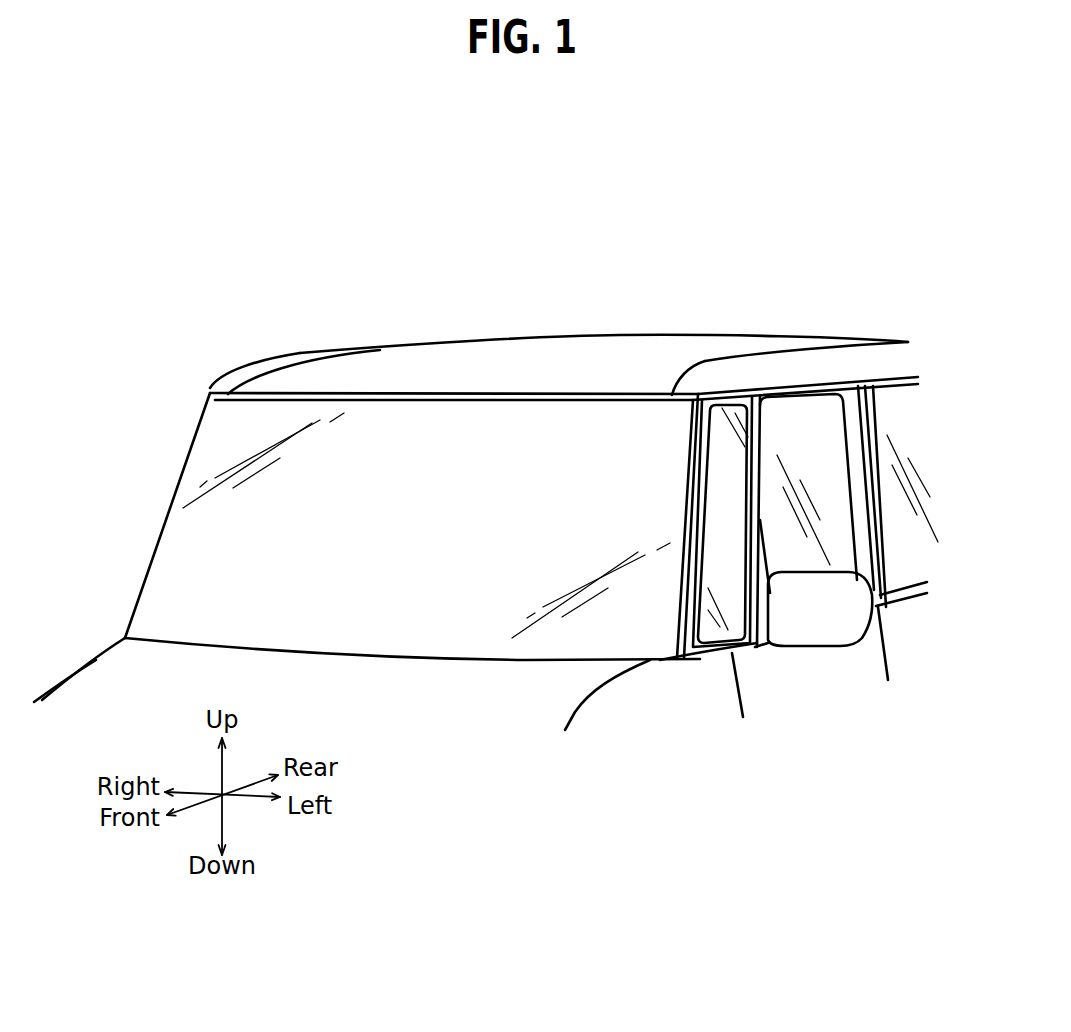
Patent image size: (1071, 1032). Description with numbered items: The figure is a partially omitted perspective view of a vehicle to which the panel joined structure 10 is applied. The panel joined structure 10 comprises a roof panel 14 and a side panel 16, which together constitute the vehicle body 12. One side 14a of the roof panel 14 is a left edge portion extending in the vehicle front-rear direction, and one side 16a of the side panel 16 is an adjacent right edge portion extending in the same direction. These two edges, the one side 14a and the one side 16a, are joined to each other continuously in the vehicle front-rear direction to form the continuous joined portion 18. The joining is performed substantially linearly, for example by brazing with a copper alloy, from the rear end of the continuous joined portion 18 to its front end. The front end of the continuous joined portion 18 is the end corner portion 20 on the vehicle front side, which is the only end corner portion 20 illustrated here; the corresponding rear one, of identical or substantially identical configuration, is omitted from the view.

The panel joined structure 10 is at (718, 345).
The vehicle body 12 is at (292, 280).
The roof panel 14 is at (472, 340).
The one side of the roof panel 14a is at (673, 377).
The side panel 16 is at (808, 365).
The one side of the side panel 16a is at (740, 362).
The continuous joined portion 18 is at (243, 377).
The end corner portion 20 is at (225, 407).